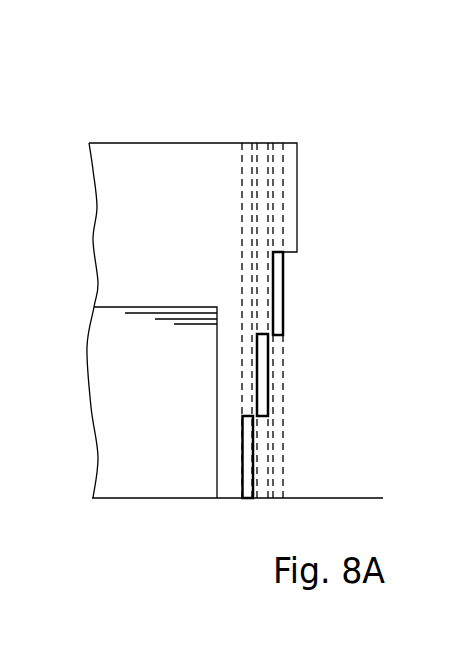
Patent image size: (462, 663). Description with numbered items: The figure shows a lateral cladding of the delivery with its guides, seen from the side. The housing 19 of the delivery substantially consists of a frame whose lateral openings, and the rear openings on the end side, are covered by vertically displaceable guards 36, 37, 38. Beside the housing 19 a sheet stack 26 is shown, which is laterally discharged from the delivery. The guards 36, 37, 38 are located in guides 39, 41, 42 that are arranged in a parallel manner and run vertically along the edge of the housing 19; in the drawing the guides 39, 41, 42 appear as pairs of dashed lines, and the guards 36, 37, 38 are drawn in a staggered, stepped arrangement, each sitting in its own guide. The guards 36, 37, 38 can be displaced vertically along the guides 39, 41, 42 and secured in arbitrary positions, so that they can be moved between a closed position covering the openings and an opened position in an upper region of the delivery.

The housing 19 is at (114, 146).
The sheet stack 26 is at (161, 413).
The guard 36 is at (275, 296).
The guard 37 is at (265, 378).
The guard 38 is at (244, 452).
The guide 39 is at (247, 142).
The guide 41 is at (262, 142).
The guide 42 is at (275, 142).